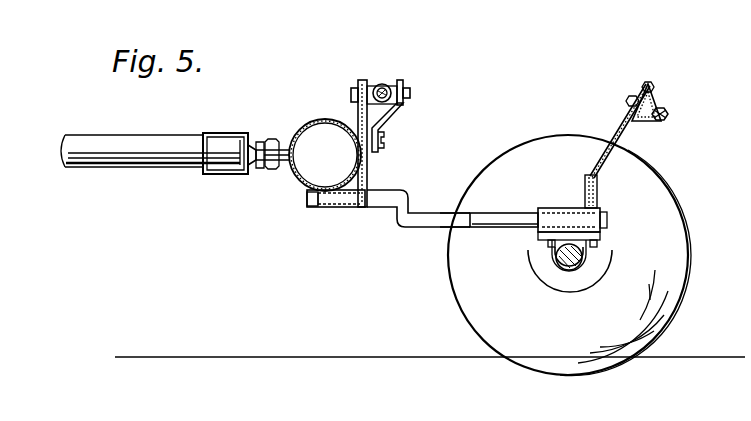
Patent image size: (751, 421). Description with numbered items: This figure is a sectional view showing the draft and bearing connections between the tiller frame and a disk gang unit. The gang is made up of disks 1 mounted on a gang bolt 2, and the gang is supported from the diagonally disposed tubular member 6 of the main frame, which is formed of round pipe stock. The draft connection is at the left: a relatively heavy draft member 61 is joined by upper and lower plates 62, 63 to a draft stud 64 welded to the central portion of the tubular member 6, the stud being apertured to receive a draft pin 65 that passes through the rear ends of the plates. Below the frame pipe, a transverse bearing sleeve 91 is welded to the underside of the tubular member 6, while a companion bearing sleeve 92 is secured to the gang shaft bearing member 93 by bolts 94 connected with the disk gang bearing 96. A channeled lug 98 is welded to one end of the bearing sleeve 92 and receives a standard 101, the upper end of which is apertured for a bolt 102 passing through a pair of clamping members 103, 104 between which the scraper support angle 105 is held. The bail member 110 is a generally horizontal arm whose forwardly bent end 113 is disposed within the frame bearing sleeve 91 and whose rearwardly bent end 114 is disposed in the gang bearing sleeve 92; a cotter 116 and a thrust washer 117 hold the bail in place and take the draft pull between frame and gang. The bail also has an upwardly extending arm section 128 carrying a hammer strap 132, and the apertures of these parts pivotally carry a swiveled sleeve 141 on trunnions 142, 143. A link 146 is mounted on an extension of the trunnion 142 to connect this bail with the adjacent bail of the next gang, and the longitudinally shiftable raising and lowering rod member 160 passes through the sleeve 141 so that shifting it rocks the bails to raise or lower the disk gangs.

The disk 1 is at (650, 192).
The gang bolt 2 is at (573, 262).
The tubular member 6 is at (318, 121).
The draft member 61 is at (128, 143).
The upper plate 62 is at (252, 141).
The lower plate 63 is at (257, 173).
The draft stud 64 is at (270, 166).
The draft pin 65 is at (269, 140).
The bearing sleeve 91 is at (333, 201).
The bearing sleeve 92 is at (555, 208).
The gang shaft bearing member 93 is at (540, 234).
The bolt 94 is at (550, 248).
The disk gang bearing 96 is at (553, 270).
The channeled lug 98 is at (585, 188).
The standard 101 is at (622, 140).
The bolt 102 is at (668, 113).
The clamping member 103 is at (658, 99).
The clamping member 104 is at (645, 121).
The scraper support angle 105 is at (653, 90).
The bail member 110 is at (417, 228).
The forwardly bent end 113 is at (380, 191).
The rearwardly bent end 114 is at (520, 199).
The cotter 116 is at (311, 203).
The thrust washer 117 is at (318, 208).
The upwardly extending arm section 128 is at (380, 140).
The hammer strap 132 is at (396, 114).
The sleeve 141 is at (397, 87).
The trunnion 142 is at (351, 94).
The trunnion 143 is at (410, 93).
The link 146 is at (362, 80).
The raising and lowering rod member 160 is at (382, 84).